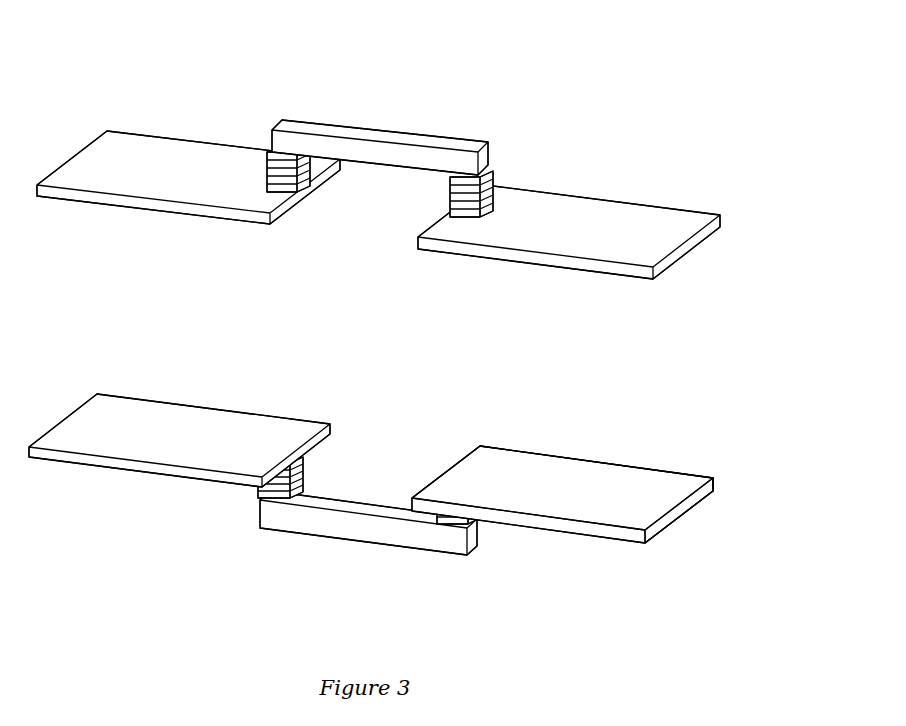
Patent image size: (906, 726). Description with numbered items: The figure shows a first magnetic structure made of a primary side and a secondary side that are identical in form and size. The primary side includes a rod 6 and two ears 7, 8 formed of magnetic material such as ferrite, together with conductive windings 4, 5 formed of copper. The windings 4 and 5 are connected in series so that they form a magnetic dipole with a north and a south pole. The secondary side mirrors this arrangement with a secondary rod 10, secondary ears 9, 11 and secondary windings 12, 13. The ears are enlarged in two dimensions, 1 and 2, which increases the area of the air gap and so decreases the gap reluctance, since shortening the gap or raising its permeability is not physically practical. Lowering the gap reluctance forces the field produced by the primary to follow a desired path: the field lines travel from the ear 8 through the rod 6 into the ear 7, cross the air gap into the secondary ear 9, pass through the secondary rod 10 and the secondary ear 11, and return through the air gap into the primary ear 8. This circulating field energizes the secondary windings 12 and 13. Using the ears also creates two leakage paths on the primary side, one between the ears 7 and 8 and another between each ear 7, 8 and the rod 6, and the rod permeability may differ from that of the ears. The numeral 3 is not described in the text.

The first dimension 1 is at (564, 449).
The second dimension 2 is at (677, 516).
The corner edge of plate 3 is at (724, 479).
The conductive winding 4 is at (248, 502).
The conductive winding 5 is at (483, 529).
The rod 6 is at (347, 535).
The ear 7 is at (595, 491).
The ear 8 is at (185, 435).
The secondary ear 9 is at (610, 231).
The secondary rod 10 is at (403, 130).
The secondary ear 11 is at (168, 158).
The secondary winding 12 is at (502, 181).
The secondary winding 13 is at (268, 148).